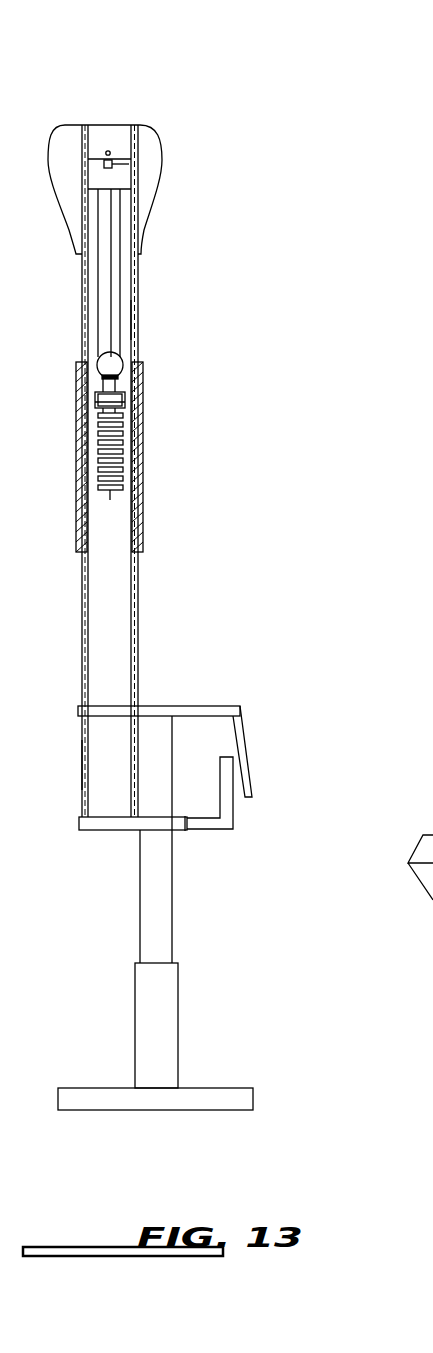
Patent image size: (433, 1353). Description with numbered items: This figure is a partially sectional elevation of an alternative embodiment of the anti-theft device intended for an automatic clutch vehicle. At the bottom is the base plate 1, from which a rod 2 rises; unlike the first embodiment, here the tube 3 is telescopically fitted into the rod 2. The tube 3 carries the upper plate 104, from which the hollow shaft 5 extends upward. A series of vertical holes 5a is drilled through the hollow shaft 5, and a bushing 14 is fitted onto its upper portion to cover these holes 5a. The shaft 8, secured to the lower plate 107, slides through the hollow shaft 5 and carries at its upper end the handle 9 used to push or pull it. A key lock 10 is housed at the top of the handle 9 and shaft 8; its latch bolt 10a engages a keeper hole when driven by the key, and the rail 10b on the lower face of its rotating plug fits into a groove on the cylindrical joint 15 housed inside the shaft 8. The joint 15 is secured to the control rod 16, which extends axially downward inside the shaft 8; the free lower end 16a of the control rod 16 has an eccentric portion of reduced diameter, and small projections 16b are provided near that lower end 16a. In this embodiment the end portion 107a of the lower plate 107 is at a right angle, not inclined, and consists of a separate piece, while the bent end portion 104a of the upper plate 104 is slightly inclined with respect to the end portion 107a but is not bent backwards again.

The base plate 1 is at (232, 1097).
The rod 2 is at (168, 1020).
The tube 3 is at (162, 917).
The hollow shaft 5 is at (140, 635).
The vertical holes 5a is at (110, 500).
The shaft 8 is at (135, 327).
The handle 9 is at (152, 175).
The key lock 10 is at (120, 136).
The latch bolt 10a is at (107, 151).
The rail or rib 10b is at (129, 163).
The bushing 14 is at (142, 502).
The joint 15 is at (118, 182).
The control rod 16 is at (110, 292).
The lower end 16a is at (112, 385).
The small projections 16b is at (112, 362).
The upper plate 104 is at (203, 712).
The bent end portion 104a is at (243, 760).
The lower plate 107 is at (110, 823).
The end portion 107a is at (230, 818).